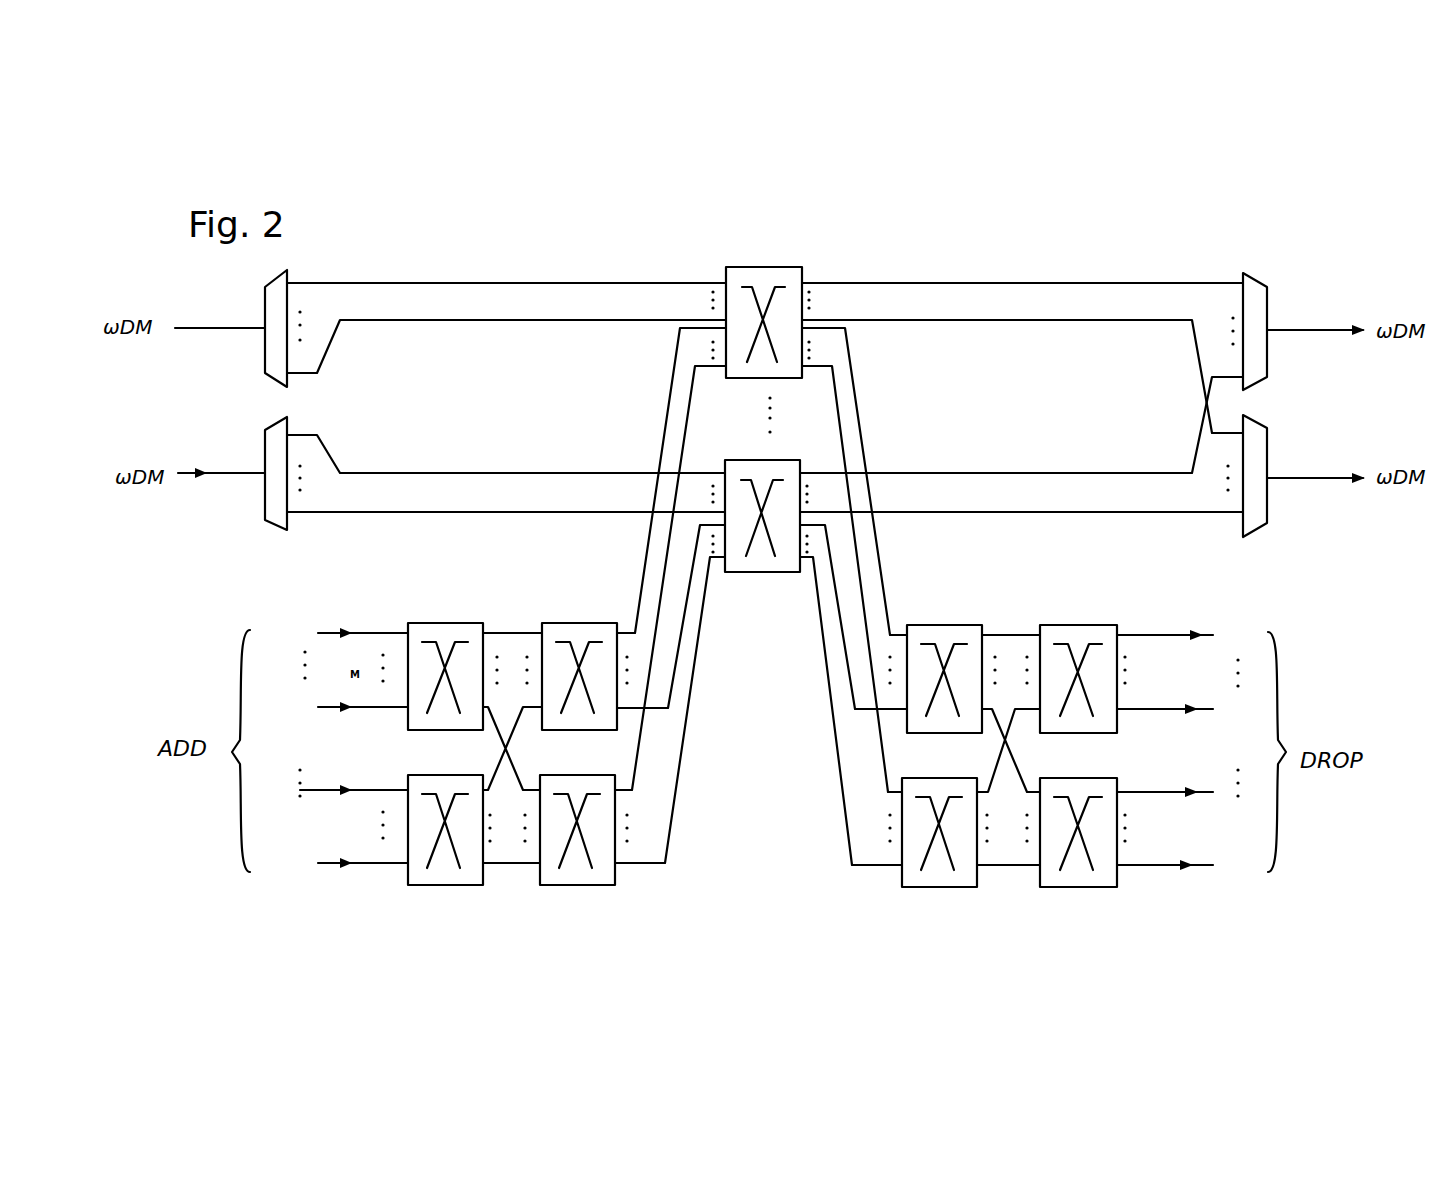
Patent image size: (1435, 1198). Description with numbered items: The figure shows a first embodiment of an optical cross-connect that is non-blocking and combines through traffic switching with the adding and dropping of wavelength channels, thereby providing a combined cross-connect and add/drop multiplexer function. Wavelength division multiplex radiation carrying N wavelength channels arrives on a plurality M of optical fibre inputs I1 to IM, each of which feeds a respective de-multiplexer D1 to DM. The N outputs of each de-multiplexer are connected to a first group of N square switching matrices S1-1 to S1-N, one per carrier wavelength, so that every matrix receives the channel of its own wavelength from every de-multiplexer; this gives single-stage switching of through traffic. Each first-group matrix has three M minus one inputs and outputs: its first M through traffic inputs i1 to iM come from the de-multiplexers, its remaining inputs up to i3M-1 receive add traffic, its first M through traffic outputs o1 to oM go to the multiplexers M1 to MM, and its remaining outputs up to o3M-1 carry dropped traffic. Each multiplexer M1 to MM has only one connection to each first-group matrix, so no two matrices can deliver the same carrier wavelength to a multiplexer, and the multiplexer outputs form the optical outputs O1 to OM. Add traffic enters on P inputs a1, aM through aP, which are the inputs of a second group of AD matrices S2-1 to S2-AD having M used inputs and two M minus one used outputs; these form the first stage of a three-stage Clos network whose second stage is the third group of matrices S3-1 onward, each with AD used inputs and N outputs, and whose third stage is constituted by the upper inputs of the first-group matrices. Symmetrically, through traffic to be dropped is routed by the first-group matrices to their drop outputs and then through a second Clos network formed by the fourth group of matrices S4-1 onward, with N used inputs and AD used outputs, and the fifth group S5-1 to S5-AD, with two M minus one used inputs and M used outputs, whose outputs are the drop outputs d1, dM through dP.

The de-multiplexer D1 is at (277, 303).
The de-multiplexer DM is at (272, 444).
The multiplexer M1 is at (1257, 292).
The multiplexer MM is at (1257, 460).
The optical fibre input I1 is at (248, 324).
The optical fibre input IM is at (263, 472).
The optical fibre output O1 is at (1294, 331).
The optical fibre output OM is at (1287, 480).
The optical switching matrix S1-1 is at (793, 272).
The optical switching matrix S1-N is at (797, 464).
The through traffic input i1 is at (683, 281).
The through traffic input iM is at (688, 320).
The input i3M-1 is at (689, 423).
The through traffic output o1 is at (855, 282).
The through traffic output oM is at (862, 320).
The output o3M-1 is at (840, 403).
The optical switching matrix S2-1 is at (470, 627).
The optical switching matrix S2-AD is at (441, 780).
The optical switching matrix S3-1 is at (582, 628).
The optical switching matrix S4-1 is at (950, 628).
The optical switching matrix S5-1 is at (1080, 628).
The optical switching matrix S5-AD is at (1086, 781).
The add input a1 is at (352, 633).
The add input aM is at (351, 708).
The add input aP is at (351, 863).
The drop output d1 is at (1184, 636).
The drop output dM is at (1183, 711).
The drop output dP is at (1182, 866).